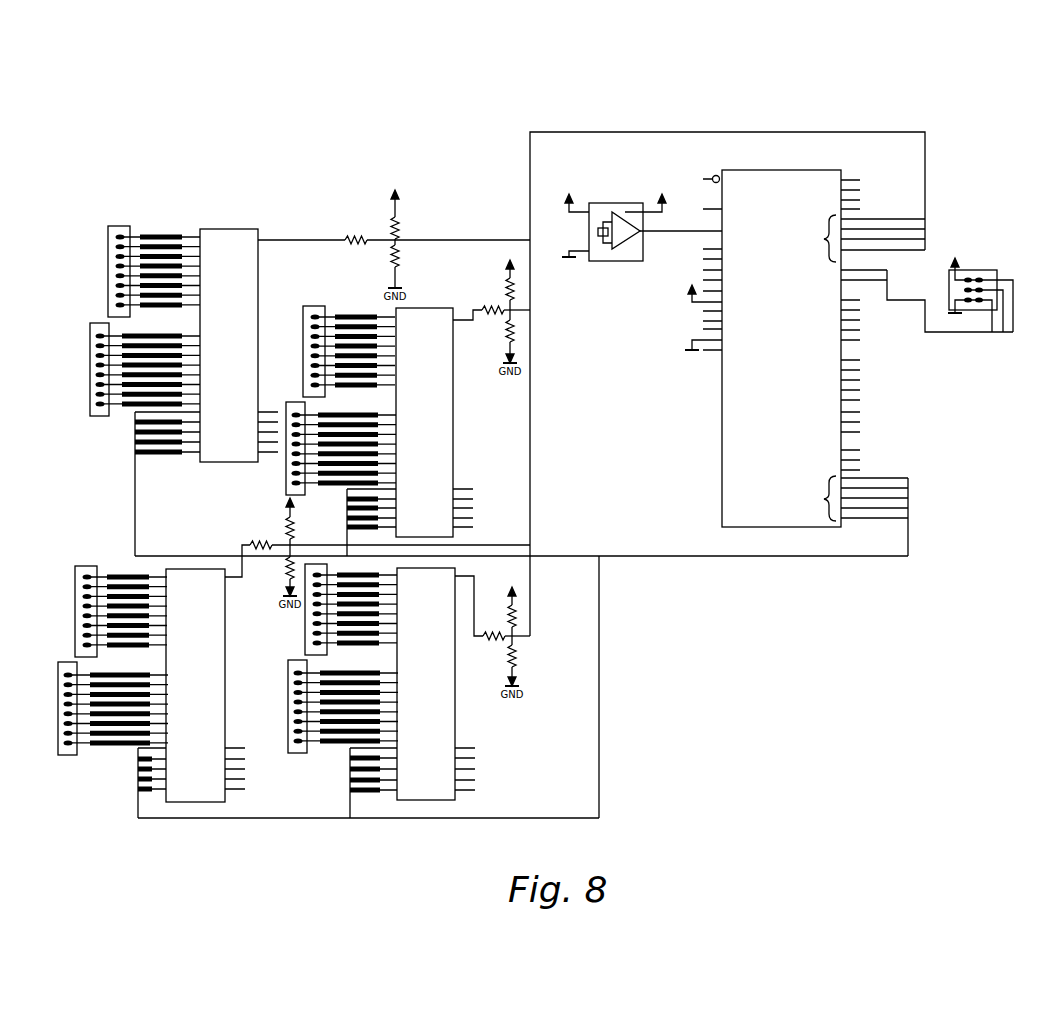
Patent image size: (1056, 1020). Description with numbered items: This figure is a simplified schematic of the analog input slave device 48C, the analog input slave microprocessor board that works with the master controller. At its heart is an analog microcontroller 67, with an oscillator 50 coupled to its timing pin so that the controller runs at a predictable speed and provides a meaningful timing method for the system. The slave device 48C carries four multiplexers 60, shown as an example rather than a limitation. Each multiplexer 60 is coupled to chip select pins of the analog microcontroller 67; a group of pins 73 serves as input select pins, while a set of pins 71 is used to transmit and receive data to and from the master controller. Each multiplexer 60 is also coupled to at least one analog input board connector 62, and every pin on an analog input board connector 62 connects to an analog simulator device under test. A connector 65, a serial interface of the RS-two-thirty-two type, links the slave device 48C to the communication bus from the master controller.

The analog input slave device 48C is at (943, 84).
The oscillator 50 is at (612, 262).
The multiplexer 60 is at (259, 278).
The analog input board connector 62 is at (128, 226).
The connector 65 is at (977, 268).
The analog microcontroller 67 is at (722, 452).
The set of pins 71 is at (853, 238).
The group of pins 73 is at (846, 498).